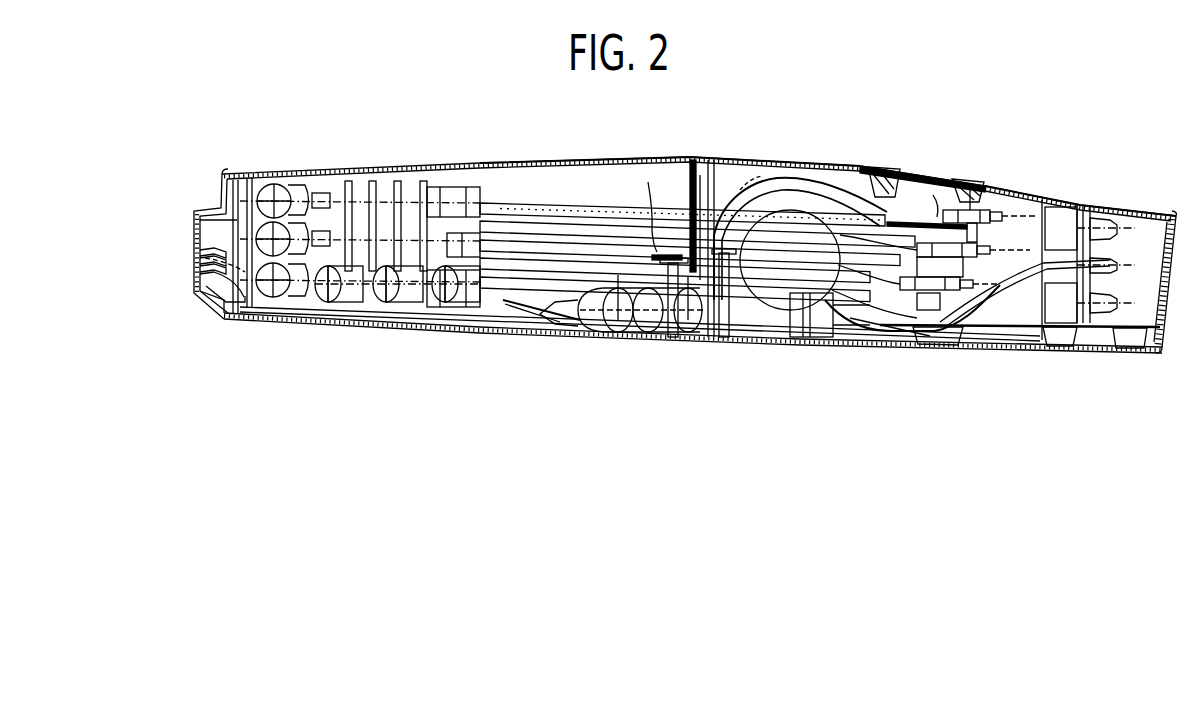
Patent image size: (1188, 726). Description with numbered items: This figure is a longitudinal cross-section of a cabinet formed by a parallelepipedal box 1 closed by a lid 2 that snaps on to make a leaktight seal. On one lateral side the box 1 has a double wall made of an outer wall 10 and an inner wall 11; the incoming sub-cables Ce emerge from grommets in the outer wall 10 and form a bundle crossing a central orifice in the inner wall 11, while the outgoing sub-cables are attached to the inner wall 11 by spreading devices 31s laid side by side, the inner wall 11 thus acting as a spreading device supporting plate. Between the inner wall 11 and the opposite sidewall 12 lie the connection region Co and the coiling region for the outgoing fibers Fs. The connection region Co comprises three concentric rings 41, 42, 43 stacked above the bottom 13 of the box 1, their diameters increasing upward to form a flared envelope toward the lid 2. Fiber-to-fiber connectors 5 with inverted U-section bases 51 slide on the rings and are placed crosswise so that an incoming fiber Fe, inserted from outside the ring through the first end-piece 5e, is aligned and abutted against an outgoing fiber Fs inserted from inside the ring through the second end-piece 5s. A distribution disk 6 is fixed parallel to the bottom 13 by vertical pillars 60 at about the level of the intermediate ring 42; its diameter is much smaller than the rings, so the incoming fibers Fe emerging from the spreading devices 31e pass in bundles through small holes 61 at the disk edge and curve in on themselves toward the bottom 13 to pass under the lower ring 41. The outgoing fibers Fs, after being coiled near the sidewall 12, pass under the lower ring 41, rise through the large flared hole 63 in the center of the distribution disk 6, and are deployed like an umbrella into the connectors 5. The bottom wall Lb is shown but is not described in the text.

The box 1 is at (213, 233).
The lid 2 is at (574, 163).
The outer wall 10 is at (1160, 353).
The inner wall 11 is at (1117, 193).
The sidewall 12 is at (219, 180).
The bottom 13 is at (597, 338).
The lower ring 41 is at (434, 207).
The intermediate ring 42 is at (560, 253).
The upper ring 43 is at (611, 223).
The fiber-to-fiber connector 5 is at (997, 203).
The second V-grooved end-piece 5s is at (933, 195).
The first V-grooved end-piece 5e is at (1007, 205).
The connector base 51 is at (1047, 227).
The distribution disk 6 is at (680, 248).
The vertical pillar 60 is at (727, 337).
The small hole 61 is at (765, 200).
The flared hole 63 is at (707, 337).
The spreading device for incoming fibers 31e is at (807, 343).
The spreading device for outgoing fibers 31s is at (1023, 337).
The bottom wall Lb is at (300, 323).
The connection region Co is at (542, 201).
The outgoing optical fiber Fs is at (747, 185).
The incoming optical fiber Fe is at (812, 193).
The incoming sub-cable Ce is at (188, 291).